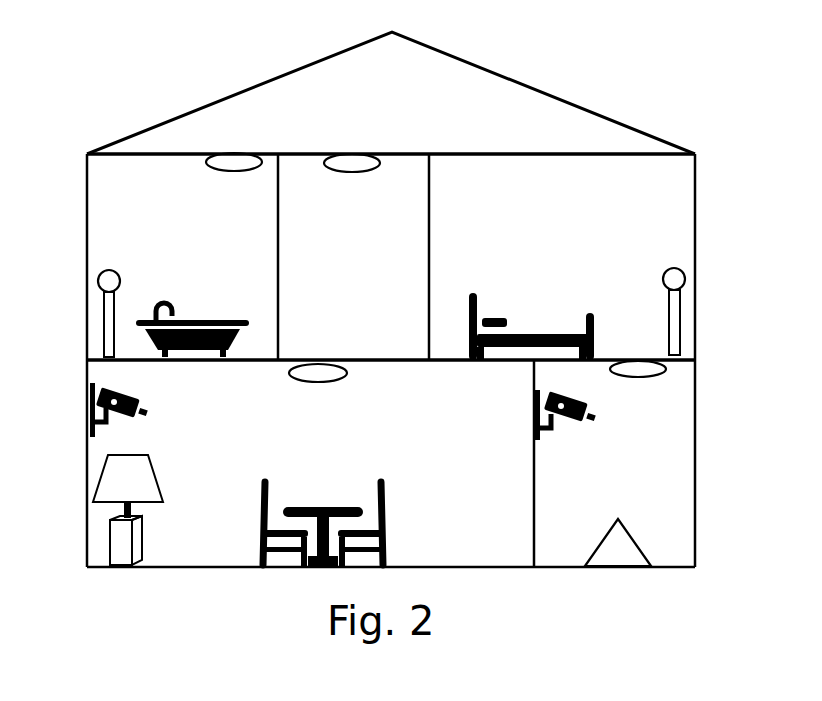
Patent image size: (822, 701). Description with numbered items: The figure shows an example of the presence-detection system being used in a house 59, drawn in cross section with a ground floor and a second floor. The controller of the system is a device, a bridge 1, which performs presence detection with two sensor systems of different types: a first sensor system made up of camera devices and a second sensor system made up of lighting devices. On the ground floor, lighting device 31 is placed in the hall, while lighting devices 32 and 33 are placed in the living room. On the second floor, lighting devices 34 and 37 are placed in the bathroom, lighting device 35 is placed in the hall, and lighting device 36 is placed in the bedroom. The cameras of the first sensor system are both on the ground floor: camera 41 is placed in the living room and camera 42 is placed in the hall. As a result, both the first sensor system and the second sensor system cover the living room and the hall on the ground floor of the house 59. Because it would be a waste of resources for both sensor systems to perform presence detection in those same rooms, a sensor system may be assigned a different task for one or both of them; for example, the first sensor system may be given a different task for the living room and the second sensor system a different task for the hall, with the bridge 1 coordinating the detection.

The house 59 is at (695, 222).
The bridge 1 is at (618, 542).
The lighting device 31 is at (645, 377).
The lighting device 32 is at (320, 382).
The lighting device 33 is at (157, 478).
The lighting device 34 is at (234, 171).
The lighting device 35 is at (352, 172).
The lighting device 36 is at (667, 271).
The lighting device 37 is at (92, 290).
The camera device 41 is at (87, 415).
The camera device 42 is at (533, 415).